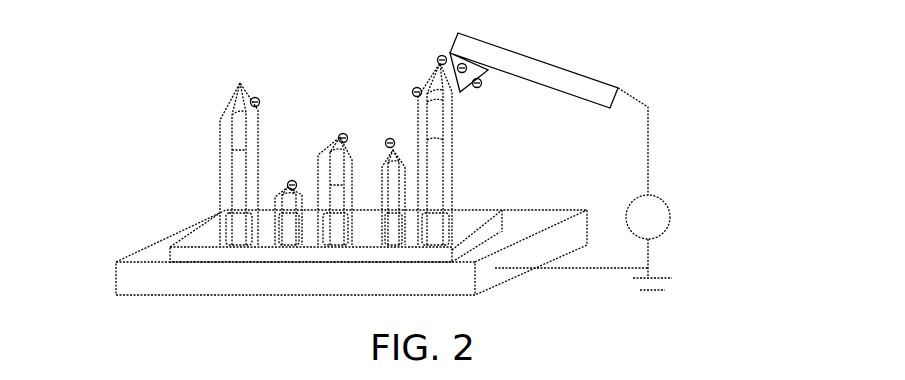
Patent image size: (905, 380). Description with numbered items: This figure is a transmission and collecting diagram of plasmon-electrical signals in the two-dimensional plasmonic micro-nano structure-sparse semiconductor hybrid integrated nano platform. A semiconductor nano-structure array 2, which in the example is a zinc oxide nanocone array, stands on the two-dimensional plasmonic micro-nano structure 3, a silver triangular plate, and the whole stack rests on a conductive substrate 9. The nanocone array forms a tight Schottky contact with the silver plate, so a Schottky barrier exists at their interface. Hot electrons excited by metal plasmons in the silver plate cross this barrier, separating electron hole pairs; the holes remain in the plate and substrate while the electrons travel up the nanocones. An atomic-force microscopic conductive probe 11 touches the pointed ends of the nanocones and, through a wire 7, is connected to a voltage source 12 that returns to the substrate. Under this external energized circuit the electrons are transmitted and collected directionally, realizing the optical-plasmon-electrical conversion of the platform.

The semiconductor nano-structure array 2 is at (452, 147).
The two-dimensional plasmonic micro-nano structure 3 is at (495, 232).
The wire 7 is at (648, 160).
The conductive substrate 9 is at (162, 240).
The atomic-force microscopic (AFM) conductive probe 11 is at (570, 65).
The voltage source 12 is at (670, 218).